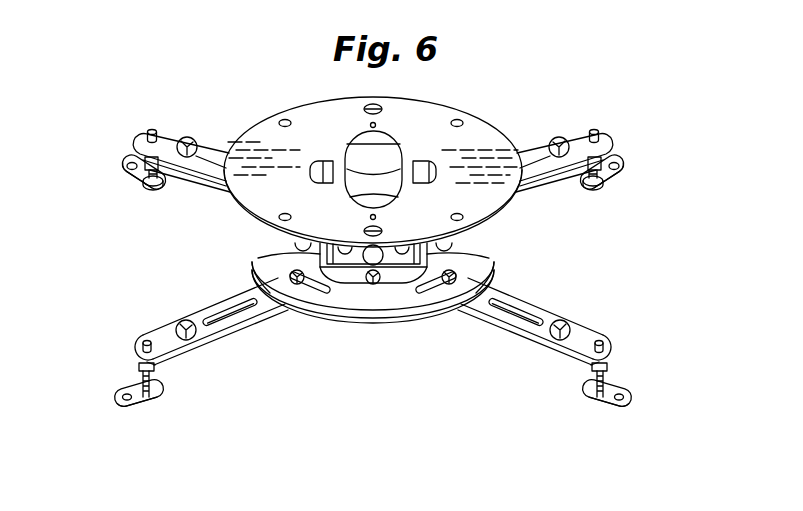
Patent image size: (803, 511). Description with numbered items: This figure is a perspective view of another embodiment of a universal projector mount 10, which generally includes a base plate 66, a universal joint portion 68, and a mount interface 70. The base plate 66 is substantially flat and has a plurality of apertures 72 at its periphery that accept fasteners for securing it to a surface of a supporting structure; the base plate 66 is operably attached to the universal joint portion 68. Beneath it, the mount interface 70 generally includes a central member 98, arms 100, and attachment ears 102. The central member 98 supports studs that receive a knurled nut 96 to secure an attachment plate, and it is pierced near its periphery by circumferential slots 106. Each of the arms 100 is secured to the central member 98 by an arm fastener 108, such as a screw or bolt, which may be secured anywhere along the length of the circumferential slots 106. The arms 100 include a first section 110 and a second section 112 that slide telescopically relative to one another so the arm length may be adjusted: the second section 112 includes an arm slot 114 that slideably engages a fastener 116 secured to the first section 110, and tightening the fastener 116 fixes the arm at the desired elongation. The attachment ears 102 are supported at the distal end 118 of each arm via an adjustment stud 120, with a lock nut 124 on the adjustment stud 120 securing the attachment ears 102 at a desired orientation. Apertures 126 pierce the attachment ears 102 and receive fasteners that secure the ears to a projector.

The universal projector mount 10 is at (538, 80).
The base plate 66 is at (440, 102).
The universal joint portion 68 is at (300, 249).
The mount interface 70 is at (503, 239).
The apertures 72 is at (283, 118).
The knurled nut 96 is at (378, 281).
The central member 98 is at (343, 293).
The arms 100 is at (158, 130).
The attachment ears 102 is at (153, 187).
The circumferential slots 106 is at (258, 261).
The arm fastener 108 is at (457, 266).
The first section 110 is at (260, 332).
The second section 112 is at (163, 333).
The arm slot 114 is at (232, 299).
The fastener 116 is at (193, 330).
The distal end 118 is at (143, 345).
The adjustment stud 120 is at (143, 182).
The lock nut 124 is at (157, 365).
The apertures 126 is at (121, 167).